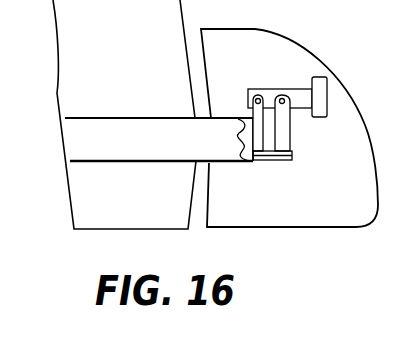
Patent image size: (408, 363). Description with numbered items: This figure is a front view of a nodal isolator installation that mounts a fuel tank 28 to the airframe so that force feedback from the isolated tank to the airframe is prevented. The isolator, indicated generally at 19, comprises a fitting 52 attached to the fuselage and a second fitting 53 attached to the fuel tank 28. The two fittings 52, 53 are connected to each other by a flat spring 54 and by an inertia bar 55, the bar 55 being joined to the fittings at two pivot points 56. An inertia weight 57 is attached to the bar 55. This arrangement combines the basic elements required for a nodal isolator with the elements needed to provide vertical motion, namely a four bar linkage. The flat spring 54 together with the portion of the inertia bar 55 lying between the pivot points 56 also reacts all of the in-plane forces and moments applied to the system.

The fastening assembly 19 is at (302, 160).
The fuel tank 28 is at (277, 30).
The fitting 52 is at (250, 100).
The fitting 53 is at (293, 135).
The spring 54 is at (268, 160).
The inertia bar 55 is at (303, 88).
The pivot points 56 is at (256, 97).
The inertia weight 57 is at (323, 85).